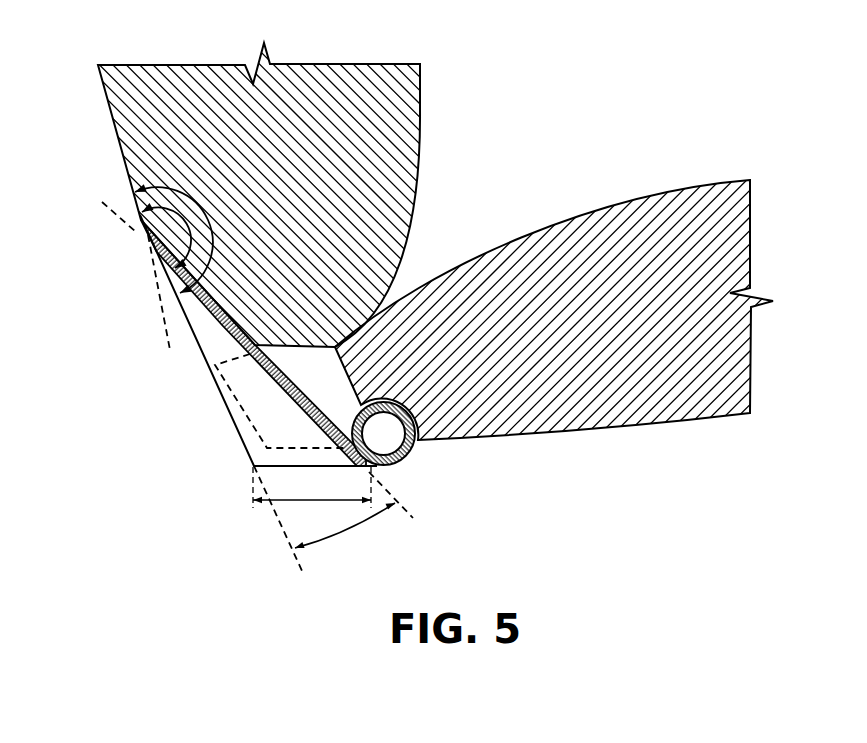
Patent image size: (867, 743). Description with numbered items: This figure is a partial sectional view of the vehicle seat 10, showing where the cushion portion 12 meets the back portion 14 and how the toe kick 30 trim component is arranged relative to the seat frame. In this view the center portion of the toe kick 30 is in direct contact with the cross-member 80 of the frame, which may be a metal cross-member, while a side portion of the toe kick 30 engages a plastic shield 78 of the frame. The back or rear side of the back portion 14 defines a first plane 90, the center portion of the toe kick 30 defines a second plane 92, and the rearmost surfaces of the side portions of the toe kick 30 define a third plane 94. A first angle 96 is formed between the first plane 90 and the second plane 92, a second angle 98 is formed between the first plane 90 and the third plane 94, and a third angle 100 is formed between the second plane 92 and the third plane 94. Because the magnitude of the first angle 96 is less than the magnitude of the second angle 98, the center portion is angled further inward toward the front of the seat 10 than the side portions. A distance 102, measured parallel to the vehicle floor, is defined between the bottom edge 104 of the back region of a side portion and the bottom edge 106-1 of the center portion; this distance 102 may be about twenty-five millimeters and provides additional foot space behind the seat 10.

The vehicle seat 10 is at (700, 45).
The cushion portion 12 is at (632, 223).
The back portion 14 is at (342, 87).
The toe kick 30 is at (282, 388).
The plastic shield 78 is at (222, 386).
The cross-member 80 is at (419, 442).
The first plane 90 is at (168, 352).
The second plane 92 is at (117, 220).
The third plane 94 is at (293, 569).
The first angle 96 is at (189, 233).
The second angle 98 is at (193, 205).
The third angle 100 is at (352, 531).
The distance 102 is at (293, 502).
The bottom edge 104 is at (375, 468).
The bottom edge of the center portion 106-1 is at (253, 466).